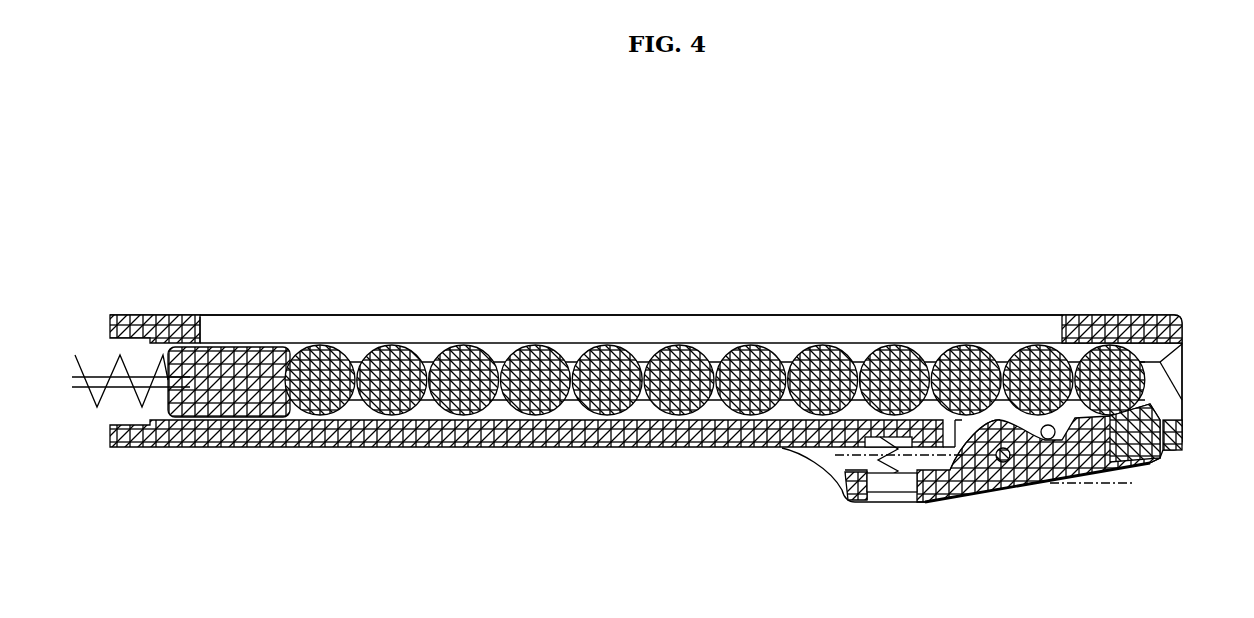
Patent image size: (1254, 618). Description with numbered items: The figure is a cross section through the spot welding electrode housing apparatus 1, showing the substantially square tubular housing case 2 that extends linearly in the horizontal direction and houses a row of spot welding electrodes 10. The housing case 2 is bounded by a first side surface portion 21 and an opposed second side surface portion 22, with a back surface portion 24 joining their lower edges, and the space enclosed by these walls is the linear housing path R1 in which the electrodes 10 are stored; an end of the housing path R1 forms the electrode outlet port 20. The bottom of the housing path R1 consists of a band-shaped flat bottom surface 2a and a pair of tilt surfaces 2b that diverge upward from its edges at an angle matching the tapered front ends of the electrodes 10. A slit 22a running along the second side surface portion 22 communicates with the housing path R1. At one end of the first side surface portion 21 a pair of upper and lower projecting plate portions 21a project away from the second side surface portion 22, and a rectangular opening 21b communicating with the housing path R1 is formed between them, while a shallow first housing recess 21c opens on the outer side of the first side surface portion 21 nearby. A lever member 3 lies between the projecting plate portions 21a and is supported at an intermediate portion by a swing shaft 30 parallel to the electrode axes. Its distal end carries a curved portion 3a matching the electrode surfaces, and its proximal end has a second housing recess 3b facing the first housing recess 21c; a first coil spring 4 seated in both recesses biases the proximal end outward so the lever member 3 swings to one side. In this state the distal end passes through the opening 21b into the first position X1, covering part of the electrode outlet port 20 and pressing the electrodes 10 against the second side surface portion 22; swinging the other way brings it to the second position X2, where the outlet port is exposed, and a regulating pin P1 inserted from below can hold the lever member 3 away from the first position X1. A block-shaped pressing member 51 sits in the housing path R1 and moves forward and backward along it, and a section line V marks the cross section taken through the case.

The spot welding electrode housing apparatus 1 is at (1070, 196).
The housing case 2 is at (1118, 313).
The flat bottom surface 2a is at (1183, 398).
The tilt surfaces 2b is at (1152, 343).
The lever member 3 is at (1128, 484).
The curved portion 3a is at (1108, 478).
The second housing recess 3b is at (862, 504).
The first coil spring 4 is at (868, 468).
The spot welding electrodes 10 is at (356, 347).
The electrode outlet port 20 is at (1184, 345).
The first side surface portion 21 is at (362, 450).
The projecting plate portions 21a is at (840, 458).
The rectangular opening 21b is at (1168, 464).
The first housing recess 21c is at (873, 437).
The second side surface portion 22 is at (165, 312).
The slit 22a is at (205, 333).
The back surface portion 24 is at (1186, 361).
The swing shaft 30 is at (973, 496).
The pressing member 51 is at (258, 345).
The regulating pin P1 is at (1053, 487).
The housing path R1 is at (1165, 384).
The section line V is at (1050, 305).
The first position X1 is at (1174, 454).
The second position X2 is at (1077, 488).